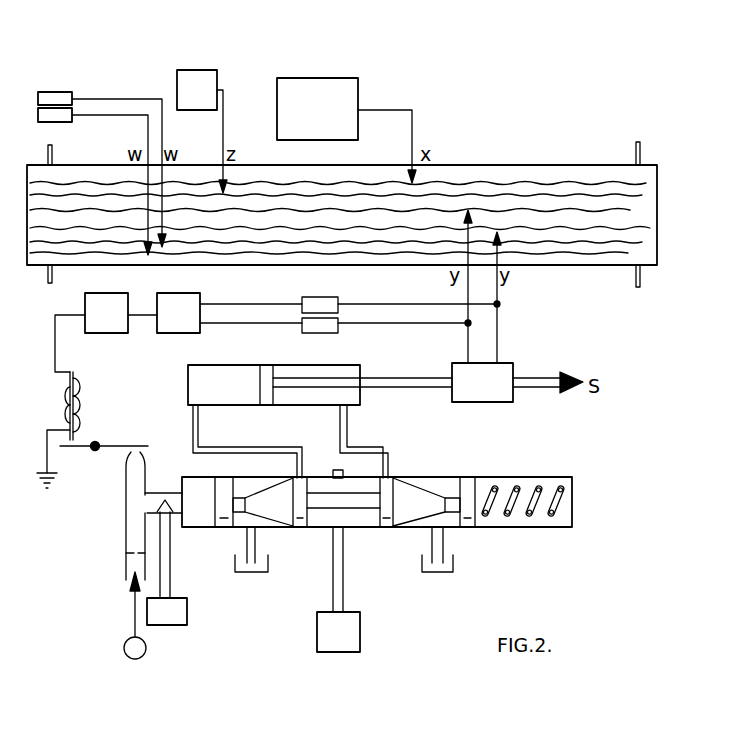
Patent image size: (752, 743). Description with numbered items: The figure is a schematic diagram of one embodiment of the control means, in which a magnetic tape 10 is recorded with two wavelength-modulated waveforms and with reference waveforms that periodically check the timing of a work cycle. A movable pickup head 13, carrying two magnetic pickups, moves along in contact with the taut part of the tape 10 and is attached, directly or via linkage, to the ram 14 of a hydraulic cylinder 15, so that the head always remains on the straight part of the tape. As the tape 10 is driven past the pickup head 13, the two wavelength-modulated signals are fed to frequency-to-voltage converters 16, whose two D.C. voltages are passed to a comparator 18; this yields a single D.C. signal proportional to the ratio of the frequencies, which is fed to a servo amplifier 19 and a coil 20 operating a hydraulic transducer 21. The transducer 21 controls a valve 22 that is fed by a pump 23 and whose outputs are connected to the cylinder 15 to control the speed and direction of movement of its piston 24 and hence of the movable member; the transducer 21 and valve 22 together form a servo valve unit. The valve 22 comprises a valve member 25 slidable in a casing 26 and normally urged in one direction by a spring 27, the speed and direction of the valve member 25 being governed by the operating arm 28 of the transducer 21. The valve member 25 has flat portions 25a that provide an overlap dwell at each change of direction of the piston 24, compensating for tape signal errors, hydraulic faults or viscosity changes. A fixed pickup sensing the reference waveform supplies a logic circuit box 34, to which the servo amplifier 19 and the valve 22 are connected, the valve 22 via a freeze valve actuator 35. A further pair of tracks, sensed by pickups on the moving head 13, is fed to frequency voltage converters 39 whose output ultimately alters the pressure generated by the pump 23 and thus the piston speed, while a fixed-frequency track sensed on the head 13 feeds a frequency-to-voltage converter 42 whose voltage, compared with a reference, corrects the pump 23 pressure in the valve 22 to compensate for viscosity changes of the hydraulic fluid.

The magnetic tape 10 is at (529, 150).
The movable pickup head 13 is at (517, 306).
The ram 14 is at (432, 378).
The hydraulic cylinder 15 is at (216, 409).
The frequency-to-voltage converters 16 is at (338, 303).
The comparator 18 is at (177, 302).
The servo amplifier 19 is at (115, 302).
The coil 20 is at (80, 392).
The hydraulic transducer 21 is at (148, 475).
The valve 22 is at (452, 469).
The pump 23 is at (348, 643).
The piston 24 is at (260, 377).
The valve member 25 is at (323, 503).
The flat portions 25a is at (380, 472).
The casing 26 is at (360, 528).
The spring 27 is at (498, 515).
The operating arm 28 is at (114, 444).
The logic circuit box 34 is at (327, 120).
The freeze valve actuator 35 is at (177, 623).
The frequency voltage converters 39 is at (72, 97).
The frequency-to-voltage converter 42 is at (206, 101).